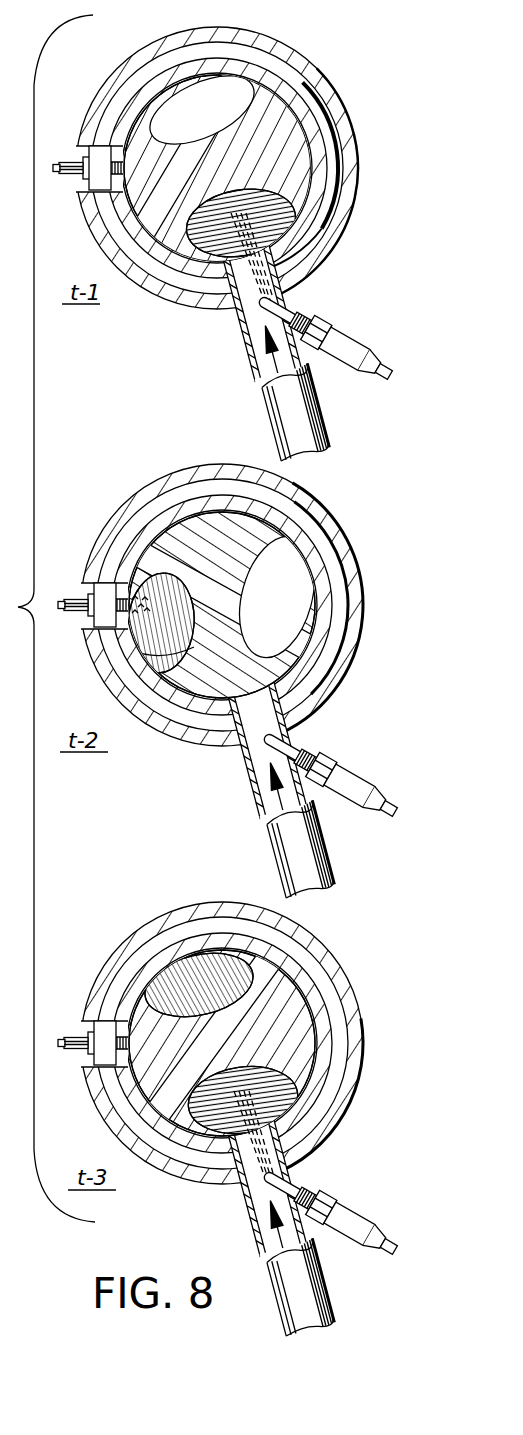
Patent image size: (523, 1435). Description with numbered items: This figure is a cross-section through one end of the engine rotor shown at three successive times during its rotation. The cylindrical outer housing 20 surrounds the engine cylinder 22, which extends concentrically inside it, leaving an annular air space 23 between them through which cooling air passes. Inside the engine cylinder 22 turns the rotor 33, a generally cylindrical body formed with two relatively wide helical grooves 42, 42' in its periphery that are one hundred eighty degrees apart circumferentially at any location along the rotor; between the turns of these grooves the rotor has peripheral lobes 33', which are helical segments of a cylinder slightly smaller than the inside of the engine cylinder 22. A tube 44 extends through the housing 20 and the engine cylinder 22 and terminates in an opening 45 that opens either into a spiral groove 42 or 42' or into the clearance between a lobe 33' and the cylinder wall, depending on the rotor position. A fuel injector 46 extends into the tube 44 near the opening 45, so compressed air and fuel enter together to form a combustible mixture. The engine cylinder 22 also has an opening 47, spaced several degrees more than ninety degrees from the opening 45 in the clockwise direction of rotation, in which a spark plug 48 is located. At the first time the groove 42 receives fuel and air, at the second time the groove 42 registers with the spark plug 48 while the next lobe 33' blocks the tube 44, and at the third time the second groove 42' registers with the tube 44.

The outer housing 20 is at (352, 147).
The engine cylinder 22 is at (313, 133).
The annular air space 23 is at (332, 197).
The rotor 33 is at (269, 570).
The peripheral lobe 33' is at (318, 163).
The helical groove 42 is at (229, 604).
The helical groove 42' is at (272, 607).
The tube 44 is at (262, 397).
The opening 45 is at (236, 305).
The fuel injector 46 is at (300, 306).
The opening 47 is at (98, 188).
The spark plug 48 is at (118, 150).